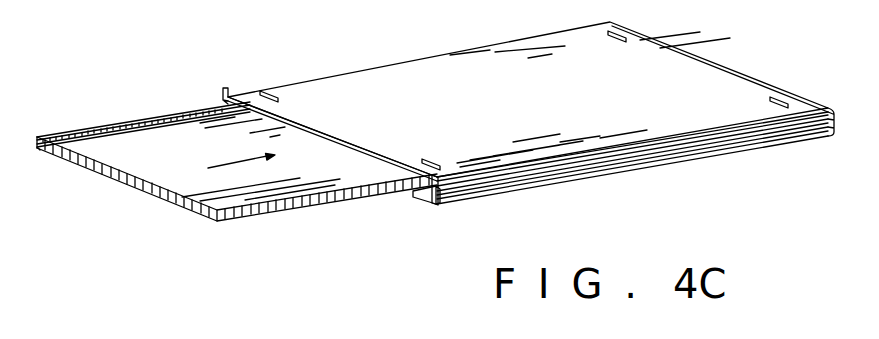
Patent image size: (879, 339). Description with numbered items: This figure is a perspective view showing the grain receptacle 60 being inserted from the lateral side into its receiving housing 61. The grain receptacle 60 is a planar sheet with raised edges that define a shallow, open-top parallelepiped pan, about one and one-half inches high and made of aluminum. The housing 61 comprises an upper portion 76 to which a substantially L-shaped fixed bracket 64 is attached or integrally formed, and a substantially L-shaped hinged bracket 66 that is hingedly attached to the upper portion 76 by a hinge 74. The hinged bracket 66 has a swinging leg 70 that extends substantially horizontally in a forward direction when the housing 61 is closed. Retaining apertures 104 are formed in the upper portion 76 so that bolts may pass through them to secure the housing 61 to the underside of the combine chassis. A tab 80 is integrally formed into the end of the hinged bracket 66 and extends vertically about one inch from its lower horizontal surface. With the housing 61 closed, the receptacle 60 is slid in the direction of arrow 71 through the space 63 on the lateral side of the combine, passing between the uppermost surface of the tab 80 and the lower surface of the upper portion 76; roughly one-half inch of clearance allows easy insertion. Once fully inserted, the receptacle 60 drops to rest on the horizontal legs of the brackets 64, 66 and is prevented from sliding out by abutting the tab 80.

The grain receptacle 60 is at (145, 187).
The grain receptacle housing 61 is at (303, 62).
The space 63 is at (345, 151).
The fixed bracket 64 is at (224, 96).
The hinged bracket 66 is at (485, 193).
The swinging leg 70 is at (649, 170).
The arrow 71 is at (208, 168).
The hinge 74 is at (830, 118).
The upper portion 76 is at (695, 75).
The tab 80 is at (442, 190).
The retaining apertures 104 is at (280, 96).